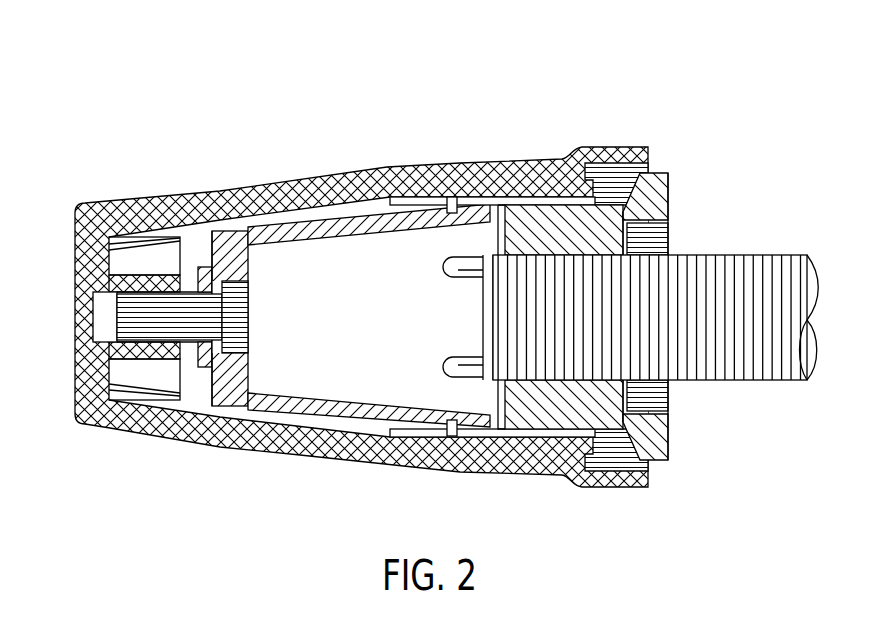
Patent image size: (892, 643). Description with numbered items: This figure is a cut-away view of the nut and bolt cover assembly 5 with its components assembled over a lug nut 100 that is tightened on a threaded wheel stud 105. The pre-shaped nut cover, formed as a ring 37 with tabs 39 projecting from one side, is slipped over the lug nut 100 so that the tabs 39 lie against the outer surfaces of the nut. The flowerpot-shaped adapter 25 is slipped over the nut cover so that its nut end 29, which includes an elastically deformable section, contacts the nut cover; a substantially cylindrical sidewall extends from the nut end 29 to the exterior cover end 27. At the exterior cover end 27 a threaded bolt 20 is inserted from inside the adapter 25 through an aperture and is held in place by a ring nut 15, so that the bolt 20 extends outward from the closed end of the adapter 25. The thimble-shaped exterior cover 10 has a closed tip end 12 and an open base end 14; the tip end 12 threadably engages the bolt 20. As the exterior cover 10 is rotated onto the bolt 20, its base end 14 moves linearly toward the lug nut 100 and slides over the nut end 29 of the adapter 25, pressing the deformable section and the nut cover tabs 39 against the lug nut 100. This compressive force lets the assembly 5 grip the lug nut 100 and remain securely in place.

The nut and bolt cover assembly 5 is at (262, 65).
The exterior cover 10 is at (260, 183).
The tip end 12 is at (75, 243).
The base end 14 is at (618, 147).
The nut 15 is at (205, 266).
The threaded bolt 20 is at (113, 318).
The adapter 25 is at (348, 390).
The exterior cover end 27 is at (247, 380).
The nut end 29 is at (505, 200).
The ring 37 is at (490, 430).
The tabs 39 is at (533, 200).
The lug nut 100 is at (615, 222).
The wheel stud 105 is at (768, 254).